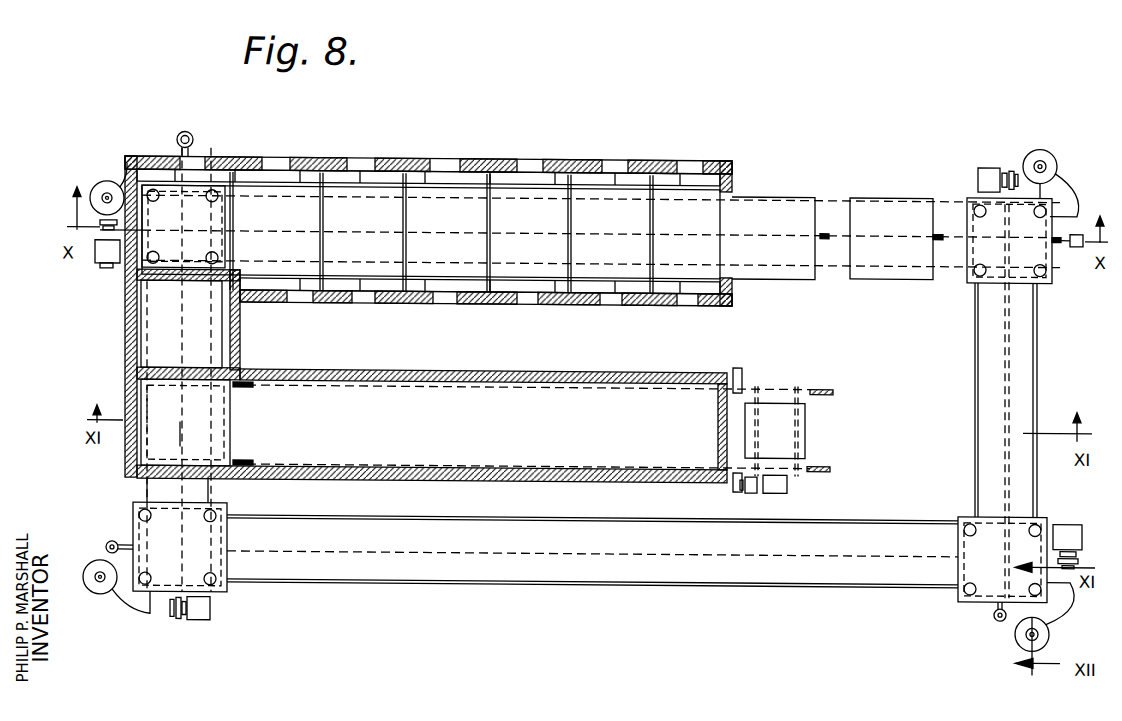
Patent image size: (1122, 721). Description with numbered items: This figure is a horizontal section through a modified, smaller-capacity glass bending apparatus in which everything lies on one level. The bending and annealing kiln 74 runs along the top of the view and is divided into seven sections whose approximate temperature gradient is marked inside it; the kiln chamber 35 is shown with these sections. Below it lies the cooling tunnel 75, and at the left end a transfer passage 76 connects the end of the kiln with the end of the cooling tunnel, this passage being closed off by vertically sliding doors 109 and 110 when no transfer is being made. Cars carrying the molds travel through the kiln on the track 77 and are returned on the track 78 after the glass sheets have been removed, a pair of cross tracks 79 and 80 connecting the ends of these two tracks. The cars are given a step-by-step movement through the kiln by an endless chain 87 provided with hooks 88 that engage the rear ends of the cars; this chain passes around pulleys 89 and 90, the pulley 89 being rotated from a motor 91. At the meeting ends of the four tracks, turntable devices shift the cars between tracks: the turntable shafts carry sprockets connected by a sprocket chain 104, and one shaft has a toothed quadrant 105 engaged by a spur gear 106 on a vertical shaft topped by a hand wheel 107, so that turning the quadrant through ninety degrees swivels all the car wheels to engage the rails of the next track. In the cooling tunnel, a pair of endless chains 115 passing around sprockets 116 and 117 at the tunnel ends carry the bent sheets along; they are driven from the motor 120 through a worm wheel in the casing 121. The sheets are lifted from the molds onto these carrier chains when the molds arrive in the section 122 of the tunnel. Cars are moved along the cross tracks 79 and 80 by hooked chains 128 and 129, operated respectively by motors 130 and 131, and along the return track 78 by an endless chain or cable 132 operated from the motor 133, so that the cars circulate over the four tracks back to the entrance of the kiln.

The furnace muffle chamber 35 is at (358, 156).
The bending and annealing kiln 74 is at (478, 156).
The cooling tunnel 75 is at (425, 368).
The transfer passage 76 is at (125, 340).
The track 77 is at (828, 278).
The track 78 is at (516, 582).
The cross track 79 is at (975, 377).
The cross track 80 is at (147, 392).
The endless chain 87 is at (835, 229).
The hooks 88 is at (824, 228).
The pulley 89 is at (111, 218).
The pulley 90 is at (1072, 240).
The motor 91 is at (100, 252).
The sprocket chain 104 is at (218, 565).
The toothed quadrant 105 is at (148, 618).
The spur gear 106 is at (112, 600).
The hand wheel 107 is at (92, 186).
The vertically sliding door 109 is at (160, 285).
The vertically sliding door 110 is at (171, 383).
The endless chains 115 is at (556, 384).
The sprockets 116 is at (253, 385).
The sprockets 117 is at (822, 384).
The motor 120 is at (775, 489).
The casing 121 is at (750, 489).
The section of the cooling tunnel 122 is at (157, 453).
The chain 128 is at (1005, 449).
The chain 129 is at (180, 432).
The motor 130 is at (985, 176).
The motor 131 is at (200, 615).
The endless chain or cable 132 is at (467, 551).
The motor 133 is at (1065, 516).